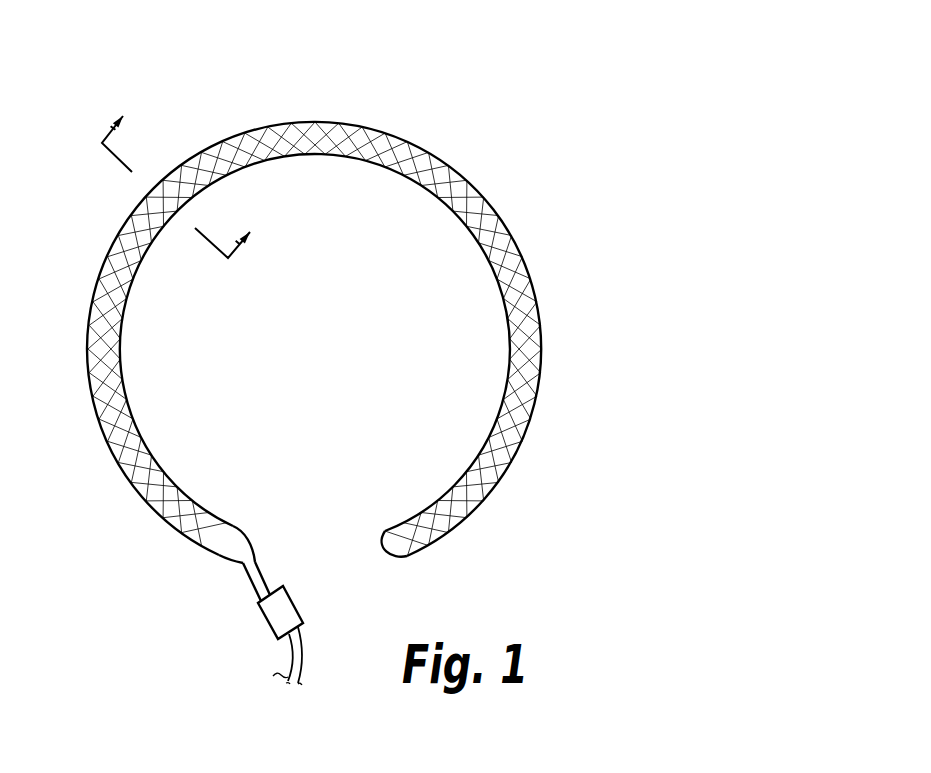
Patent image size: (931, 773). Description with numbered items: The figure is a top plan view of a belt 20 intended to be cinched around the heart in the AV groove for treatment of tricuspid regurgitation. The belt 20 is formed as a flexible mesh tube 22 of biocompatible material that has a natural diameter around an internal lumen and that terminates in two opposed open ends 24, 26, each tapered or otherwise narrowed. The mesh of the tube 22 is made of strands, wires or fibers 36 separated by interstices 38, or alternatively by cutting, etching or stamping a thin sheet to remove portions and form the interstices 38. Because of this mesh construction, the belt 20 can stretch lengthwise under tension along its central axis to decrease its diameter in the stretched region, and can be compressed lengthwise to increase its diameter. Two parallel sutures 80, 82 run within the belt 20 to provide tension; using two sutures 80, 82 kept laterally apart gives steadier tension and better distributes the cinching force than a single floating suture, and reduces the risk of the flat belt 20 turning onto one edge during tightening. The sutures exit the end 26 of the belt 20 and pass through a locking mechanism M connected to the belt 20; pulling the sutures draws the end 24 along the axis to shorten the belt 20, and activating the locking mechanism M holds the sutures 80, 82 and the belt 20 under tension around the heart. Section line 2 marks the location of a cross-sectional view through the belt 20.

The belt 20 is at (448, 112).
The flexible mesh tube 22 is at (518, 243).
The open end 24 is at (385, 556).
The open end 26 is at (245, 564).
The strands, wires or fibers 36 is at (128, 275).
The interstices 38 is at (113, 287).
The suture 80 is at (348, 120).
The suture 82 is at (325, 154).
The locking mechanism M is at (272, 637).
The section line 2- 2 is at (183, 172).